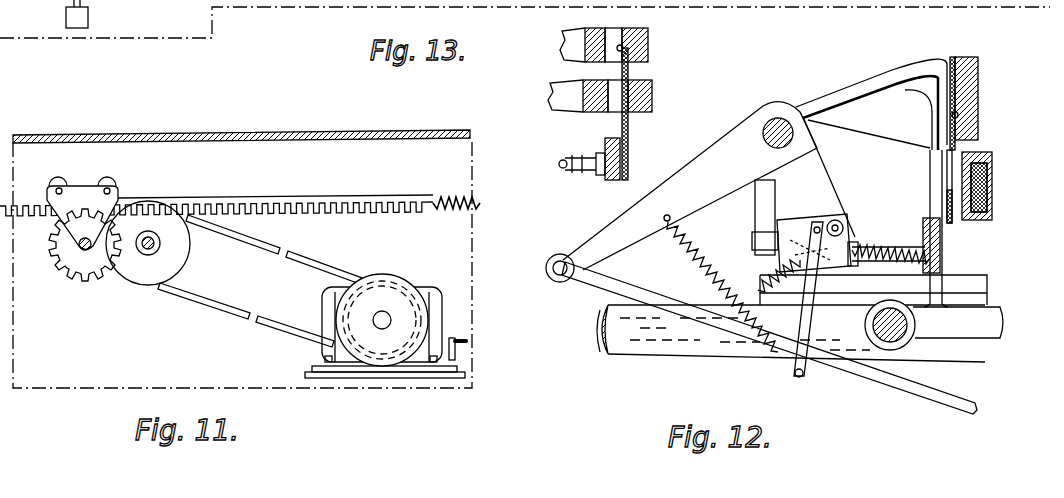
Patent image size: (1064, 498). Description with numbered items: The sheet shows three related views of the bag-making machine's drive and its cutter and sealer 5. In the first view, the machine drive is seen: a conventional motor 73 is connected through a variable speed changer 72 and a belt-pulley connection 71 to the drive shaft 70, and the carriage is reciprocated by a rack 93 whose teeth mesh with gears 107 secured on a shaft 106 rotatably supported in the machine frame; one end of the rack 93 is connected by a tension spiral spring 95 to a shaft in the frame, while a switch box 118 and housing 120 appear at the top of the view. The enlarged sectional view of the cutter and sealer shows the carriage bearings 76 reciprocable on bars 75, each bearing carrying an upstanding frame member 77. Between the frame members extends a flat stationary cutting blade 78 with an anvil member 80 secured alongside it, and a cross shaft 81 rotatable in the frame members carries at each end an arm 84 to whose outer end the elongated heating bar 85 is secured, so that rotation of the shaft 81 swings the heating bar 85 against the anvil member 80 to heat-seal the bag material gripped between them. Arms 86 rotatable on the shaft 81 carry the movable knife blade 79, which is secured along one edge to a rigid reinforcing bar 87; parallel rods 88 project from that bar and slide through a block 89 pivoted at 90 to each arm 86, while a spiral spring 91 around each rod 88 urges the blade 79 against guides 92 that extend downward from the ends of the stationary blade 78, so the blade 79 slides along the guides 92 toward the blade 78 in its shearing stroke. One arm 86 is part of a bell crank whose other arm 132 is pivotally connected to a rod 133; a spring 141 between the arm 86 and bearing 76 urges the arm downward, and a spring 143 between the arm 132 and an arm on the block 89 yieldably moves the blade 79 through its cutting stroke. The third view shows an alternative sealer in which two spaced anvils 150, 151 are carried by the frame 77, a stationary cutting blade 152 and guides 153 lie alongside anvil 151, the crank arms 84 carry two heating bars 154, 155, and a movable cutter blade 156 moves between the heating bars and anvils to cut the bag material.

In FIG. 12, the strand tensioning assembly 5 is at (908, 52).
In FIG. 11, the drive shaft 70 is at (145, 254).
In FIG. 11, the belt-pulley connection 71 is at (190, 243).
In FIG. 11, the variable speed changer 72 is at (440, 294).
In FIG. 11, the motor 73 is at (395, 282).
In FIG. 12, the bars 75 is at (650, 340).
In FIG. 12, the bearings 76 is at (769, 368).
In FIG. 13, the frame member 77 is at (584, 30).
In FIG. 12, the frame member 77 is at (870, 83).
In FIG. 12, the cutting blade 78 is at (958, 115).
In FIG. 12, the knife blade 79 is at (952, 221).
In FIG. 12, the anvil member 80 is at (972, 92).
In FIG. 12, the shaft 81 is at (773, 127).
In FIG. 13, the arm 84 is at (560, 95).
In FIG. 12, the arm 84 is at (870, 138).
In FIG. 12, the heating bar 85 is at (983, 183).
In FIG. 12, the arms 86 is at (817, 173).
In FIG. 12, the reinforcing bar 87 is at (942, 248).
In FIG. 12, the rods 88 is at (903, 250).
In FIG. 12, the block 89 is at (812, 230).
In FIG. 12, the pivot 90 is at (840, 224).
In FIG. 12, the spiral spring 91 is at (890, 232).
In FIG. 12, the guides 92 is at (938, 178).
In FIG. 11, the rack 93 is at (370, 196).
In FIG. 11, the tension spiral spring 95 is at (480, 203).
In FIG. 11, the shaft 106 is at (75, 253).
In FIG. 11, the gears 107 is at (83, 268).
In FIG. 11, the switch box 118 is at (66, 17).
In FIG. 11, the housing 120 is at (164, 6).
In FIG. 13, the arm 132 is at (682, 170).
In FIG. 12, the arm 132 is at (682, 170).
In FIG. 12, the rod 133 is at (597, 287).
In FIG. 12, the spring 141 is at (770, 263).
In FIG. 12, the spring 143 is at (707, 248).
In FIG. 13, the anvil 150 is at (598, 28).
In FIG. 13, the anvil 151 is at (645, 33).
In FIG. 13, the stationary cutting blade 152 is at (632, 50).
In FIG. 13, the guides 153 is at (630, 68).
In FIG. 13, the heating bar 154 is at (592, 113).
In FIG. 13, the heating bar 155 is at (643, 113).
In FIG. 13, the movable cutter blade 156 is at (623, 140).